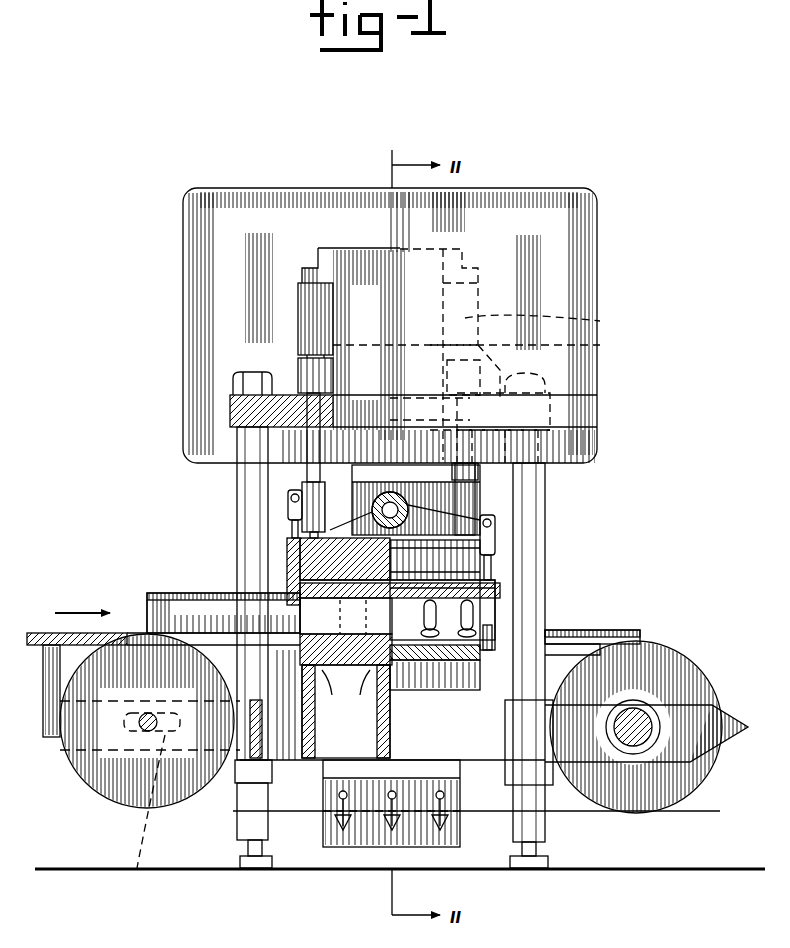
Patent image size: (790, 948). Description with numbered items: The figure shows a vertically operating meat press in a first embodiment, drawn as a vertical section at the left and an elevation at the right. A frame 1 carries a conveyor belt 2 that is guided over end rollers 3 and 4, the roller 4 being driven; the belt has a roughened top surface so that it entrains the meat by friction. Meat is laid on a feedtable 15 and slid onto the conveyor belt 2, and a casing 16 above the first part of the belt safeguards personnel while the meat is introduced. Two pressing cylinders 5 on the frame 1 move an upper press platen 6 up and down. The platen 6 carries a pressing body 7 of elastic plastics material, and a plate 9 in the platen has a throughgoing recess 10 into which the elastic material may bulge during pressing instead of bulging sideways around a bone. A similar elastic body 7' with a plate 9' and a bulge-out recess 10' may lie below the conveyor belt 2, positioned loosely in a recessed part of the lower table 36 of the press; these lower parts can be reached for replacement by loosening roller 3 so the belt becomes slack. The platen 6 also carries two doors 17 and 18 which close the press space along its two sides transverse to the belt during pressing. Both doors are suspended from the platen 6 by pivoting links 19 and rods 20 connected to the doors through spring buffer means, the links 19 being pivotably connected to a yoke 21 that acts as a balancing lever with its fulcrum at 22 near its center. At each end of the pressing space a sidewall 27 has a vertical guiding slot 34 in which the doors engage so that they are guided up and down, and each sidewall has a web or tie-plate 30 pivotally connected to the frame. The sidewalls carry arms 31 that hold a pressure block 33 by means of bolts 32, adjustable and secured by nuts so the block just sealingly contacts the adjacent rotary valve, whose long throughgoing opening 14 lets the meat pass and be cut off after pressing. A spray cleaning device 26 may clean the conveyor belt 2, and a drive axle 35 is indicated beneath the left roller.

The frame 1 is at (52, 737).
The conveyor belt 2 is at (178, 633).
The end roller 3 is at (118, 808).
The end roller 4 is at (645, 800).
The pressing cylinder 5 is at (298, 318).
The upper press platen 6 is at (330, 566).
The pressing body 7 is at (346, 617).
The elastic pressing body 7' is at (373, 617).
The plate 9 is at (298, 568).
The plate 9' is at (325, 685).
The recess 10 is at (400, 574).
The recess 10' is at (367, 685).
The opening 14 is at (346, 616).
The feedtable 15 is at (45, 633).
The casing 16 is at (152, 606).
The door 17 is at (290, 548).
The door 18 is at (495, 576).
The pivoting link 19 is at (290, 500).
The rod 20 is at (306, 520).
The yoke 21 is at (410, 522).
The fulcrum 22 is at (470, 480).
The spray cleaning device 26 is at (365, 830).
The sidewall 27 is at (470, 592).
The tie-plate 30 is at (488, 612).
The arm 31 is at (468, 606).
The bolt 32 is at (428, 608).
The pressure block 33 is at (500, 655).
The vertical guiding slot 34 is at (300, 615).
The drive axle 35 is at (152, 803).
The lower table 36 is at (346, 711).